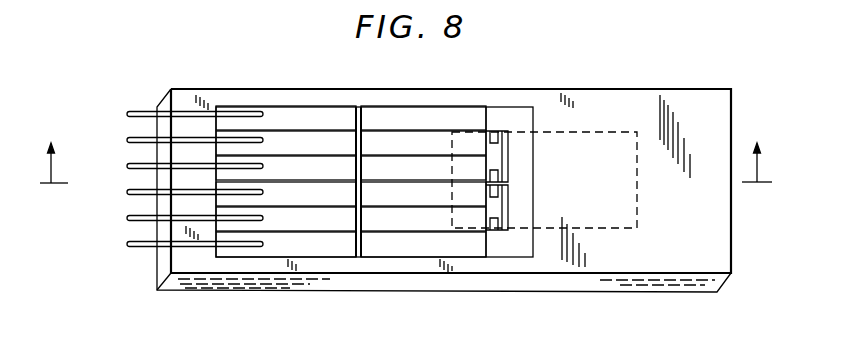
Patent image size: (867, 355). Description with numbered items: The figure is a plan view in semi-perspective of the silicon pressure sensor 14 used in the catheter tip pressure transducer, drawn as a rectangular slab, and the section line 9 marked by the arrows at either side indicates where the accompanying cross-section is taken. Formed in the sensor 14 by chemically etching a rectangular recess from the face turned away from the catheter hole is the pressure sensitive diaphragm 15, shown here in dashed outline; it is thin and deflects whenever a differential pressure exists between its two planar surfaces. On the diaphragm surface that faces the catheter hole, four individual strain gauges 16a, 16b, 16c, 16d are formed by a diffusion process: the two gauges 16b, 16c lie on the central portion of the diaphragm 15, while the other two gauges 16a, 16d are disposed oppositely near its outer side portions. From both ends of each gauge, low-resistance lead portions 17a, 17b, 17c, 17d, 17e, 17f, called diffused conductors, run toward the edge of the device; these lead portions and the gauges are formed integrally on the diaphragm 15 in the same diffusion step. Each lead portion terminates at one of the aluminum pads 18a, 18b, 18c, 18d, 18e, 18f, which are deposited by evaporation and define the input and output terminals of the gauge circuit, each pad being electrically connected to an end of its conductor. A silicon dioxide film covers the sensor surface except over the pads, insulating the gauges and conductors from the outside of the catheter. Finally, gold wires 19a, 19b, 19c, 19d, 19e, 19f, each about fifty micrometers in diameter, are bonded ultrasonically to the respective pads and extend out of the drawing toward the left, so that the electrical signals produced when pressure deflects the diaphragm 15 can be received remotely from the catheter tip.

The section line 9- 9 is at (406, 148).
The silicon pressure sensor 14 is at (386, 270).
The pressure sensitive diaphragm 15 is at (643, 223).
The strain gauge 16a is at (493, 132).
The strain gauge 16b is at (502, 172).
The strain gauge 16c is at (504, 192).
The strain gauge 16d is at (492, 233).
The lead portion 17a is at (423, 118).
The lead portion 17b is at (423, 143).
The lead portion 17c is at (423, 168).
The lead portion 17d is at (423, 194).
The lead portion 17e is at (423, 219).
The lead portion 17f is at (423, 244).
The aluminum pad 18a is at (286, 118).
The aluminum pad 18b is at (286, 143).
The aluminum pad 18c is at (286, 168).
The aluminum pad 18d is at (286, 194).
The aluminum pad 18e is at (286, 219).
The aluminum pad 18f is at (286, 244).
The gold wire 19a is at (127, 114).
The gold wire 19b is at (127, 140).
The gold wire 19c is at (127, 166).
The gold wire 19d is at (127, 192).
The gold wire 19e is at (127, 218).
The gold wire 19f is at (127, 244).